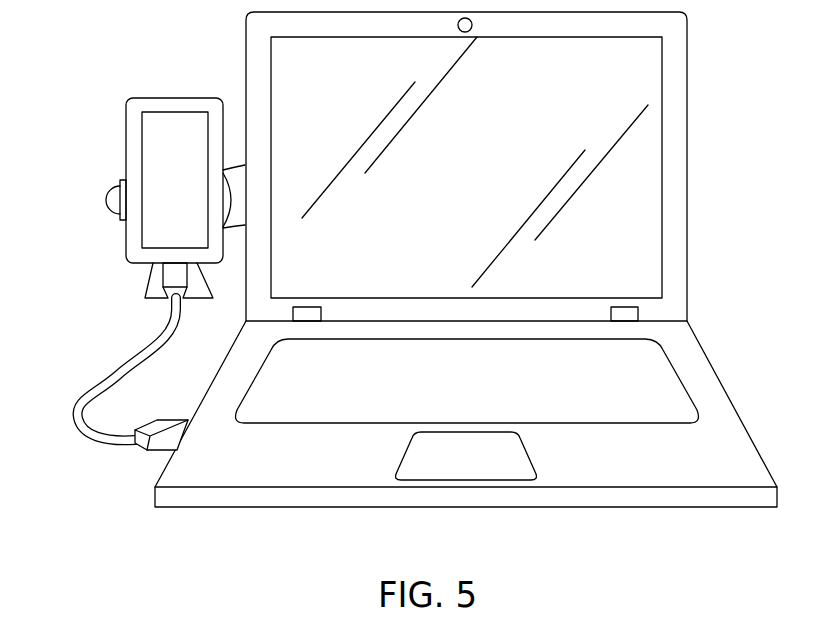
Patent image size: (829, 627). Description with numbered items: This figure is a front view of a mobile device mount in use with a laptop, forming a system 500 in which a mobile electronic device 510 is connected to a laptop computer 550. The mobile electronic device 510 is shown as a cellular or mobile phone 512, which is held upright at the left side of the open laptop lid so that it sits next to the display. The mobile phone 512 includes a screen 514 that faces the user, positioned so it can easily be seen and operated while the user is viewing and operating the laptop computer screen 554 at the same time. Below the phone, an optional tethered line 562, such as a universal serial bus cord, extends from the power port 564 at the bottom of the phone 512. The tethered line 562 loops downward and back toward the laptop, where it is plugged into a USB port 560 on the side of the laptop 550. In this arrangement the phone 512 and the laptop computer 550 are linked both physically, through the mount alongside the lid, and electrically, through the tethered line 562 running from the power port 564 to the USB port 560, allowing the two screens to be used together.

The system 500 is at (401, 259).
The mobile electronic device 510 is at (148, 163).
The mobile phone 512 is at (126, 152).
The screen 514 is at (193, 191).
The laptop computer 550 is at (467, 259).
The laptop computer screen 554 is at (483, 178).
The USB port 560 is at (178, 420).
The tethered line 562 is at (72, 410).
The power port 564 is at (163, 271).